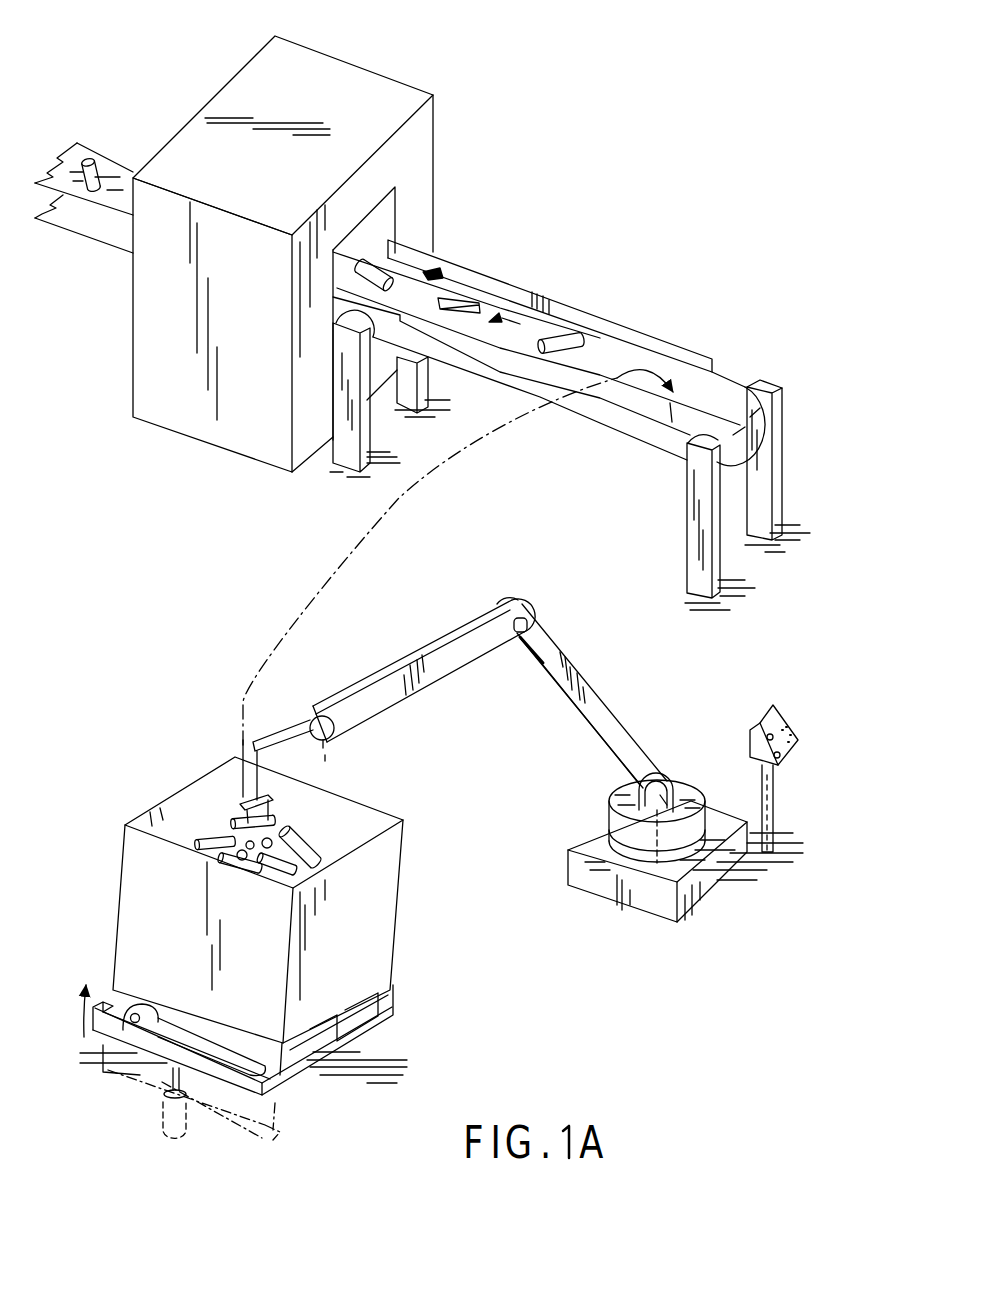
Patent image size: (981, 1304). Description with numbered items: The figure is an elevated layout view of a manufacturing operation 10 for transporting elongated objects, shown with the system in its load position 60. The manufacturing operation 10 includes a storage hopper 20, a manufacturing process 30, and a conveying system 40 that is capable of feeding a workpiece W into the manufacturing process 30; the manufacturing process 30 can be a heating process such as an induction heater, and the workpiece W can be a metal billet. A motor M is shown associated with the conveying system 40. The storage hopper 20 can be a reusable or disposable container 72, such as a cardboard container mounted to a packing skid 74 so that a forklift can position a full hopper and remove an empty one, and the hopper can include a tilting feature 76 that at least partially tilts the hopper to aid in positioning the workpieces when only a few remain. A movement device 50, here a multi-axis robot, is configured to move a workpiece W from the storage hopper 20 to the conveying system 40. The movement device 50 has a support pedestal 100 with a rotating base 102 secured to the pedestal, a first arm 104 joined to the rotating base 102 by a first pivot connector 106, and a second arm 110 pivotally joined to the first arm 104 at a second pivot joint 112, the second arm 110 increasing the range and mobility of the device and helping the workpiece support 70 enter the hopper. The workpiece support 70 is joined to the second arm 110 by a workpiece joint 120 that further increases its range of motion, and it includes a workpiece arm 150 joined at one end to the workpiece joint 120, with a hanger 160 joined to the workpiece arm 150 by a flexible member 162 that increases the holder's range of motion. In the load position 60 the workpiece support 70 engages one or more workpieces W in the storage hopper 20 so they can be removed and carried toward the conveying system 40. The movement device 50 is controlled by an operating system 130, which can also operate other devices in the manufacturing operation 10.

The manufacturing operation 10 is at (697, 168).
The storage hopper 20 is at (276, 948).
The manufacturing process 30 is at (422, 100).
The conveying system 40 is at (689, 324).
The movement device 50 is at (460, 777).
The load position 60 is at (252, 737).
The workpiece support 70 is at (252, 742).
The disposable container 72 is at (137, 885).
The packing skid 74 is at (347, 1055).
The tilting feature 76 is at (170, 1082).
The support pedestal 100 is at (707, 873).
The rotating base 102 is at (615, 823).
The first arm 104 is at (600, 707).
The first pivot connector 106 is at (667, 781).
The second arm 110 is at (437, 672).
The second pivot joint 112 is at (525, 605).
The workpiece joint 120 is at (332, 740).
The operating system 130 is at (782, 717).
The workpiece arm 150 is at (300, 723).
The hanger 160 is at (247, 807).
The flexible member 162 is at (260, 757).
The workpiece W is at (95, 168).
The conveyor motor M is at (773, 388).